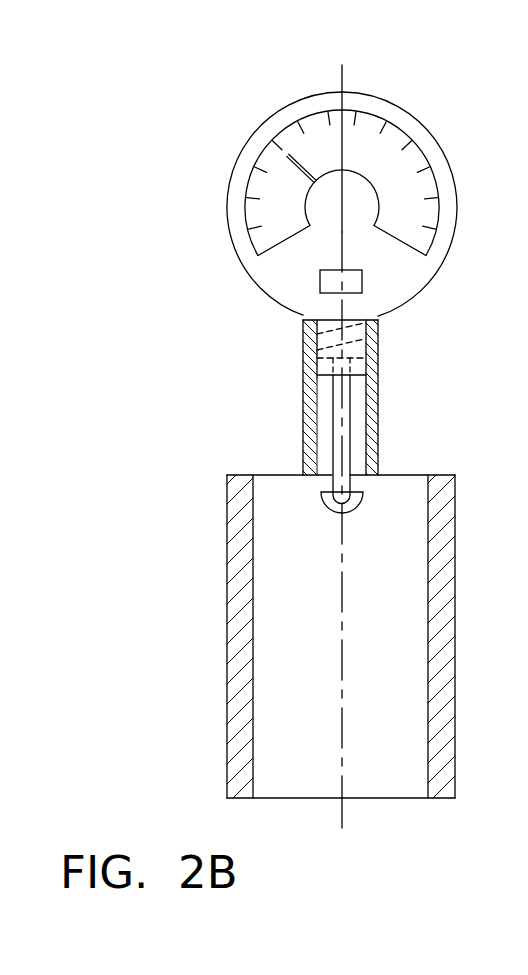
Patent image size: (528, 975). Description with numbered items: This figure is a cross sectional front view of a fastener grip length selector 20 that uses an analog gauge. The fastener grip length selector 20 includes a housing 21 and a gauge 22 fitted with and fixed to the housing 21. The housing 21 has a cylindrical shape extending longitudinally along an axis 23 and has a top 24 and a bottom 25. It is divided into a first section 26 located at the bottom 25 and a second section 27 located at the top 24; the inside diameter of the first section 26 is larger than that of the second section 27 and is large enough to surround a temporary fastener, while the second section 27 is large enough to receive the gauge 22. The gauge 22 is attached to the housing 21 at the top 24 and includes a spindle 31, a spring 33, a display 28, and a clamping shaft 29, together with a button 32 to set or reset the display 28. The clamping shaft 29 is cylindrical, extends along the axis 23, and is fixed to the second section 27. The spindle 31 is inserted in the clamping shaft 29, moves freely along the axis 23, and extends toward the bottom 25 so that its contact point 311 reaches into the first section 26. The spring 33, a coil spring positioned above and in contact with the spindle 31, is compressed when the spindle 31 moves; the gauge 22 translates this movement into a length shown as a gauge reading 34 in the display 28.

The fastener grip length selector 20 is at (214, 99).
The housing 21 is at (388, 666).
The gauge 22 is at (305, 277).
The axis 23 is at (342, 77).
The top 24 is at (310, 321).
The bottom 25 is at (377, 798).
The first section 26 is at (263, 610).
The second section 27 is at (327, 443).
The display 28 is at (413, 160).
The clamping shaft 29 is at (360, 375).
The spindle 31 is at (343, 452).
The button 32 is at (355, 282).
The spring 33 is at (317, 357).
The gauge reading 34 is at (283, 160).
The contact point 311 is at (347, 503).